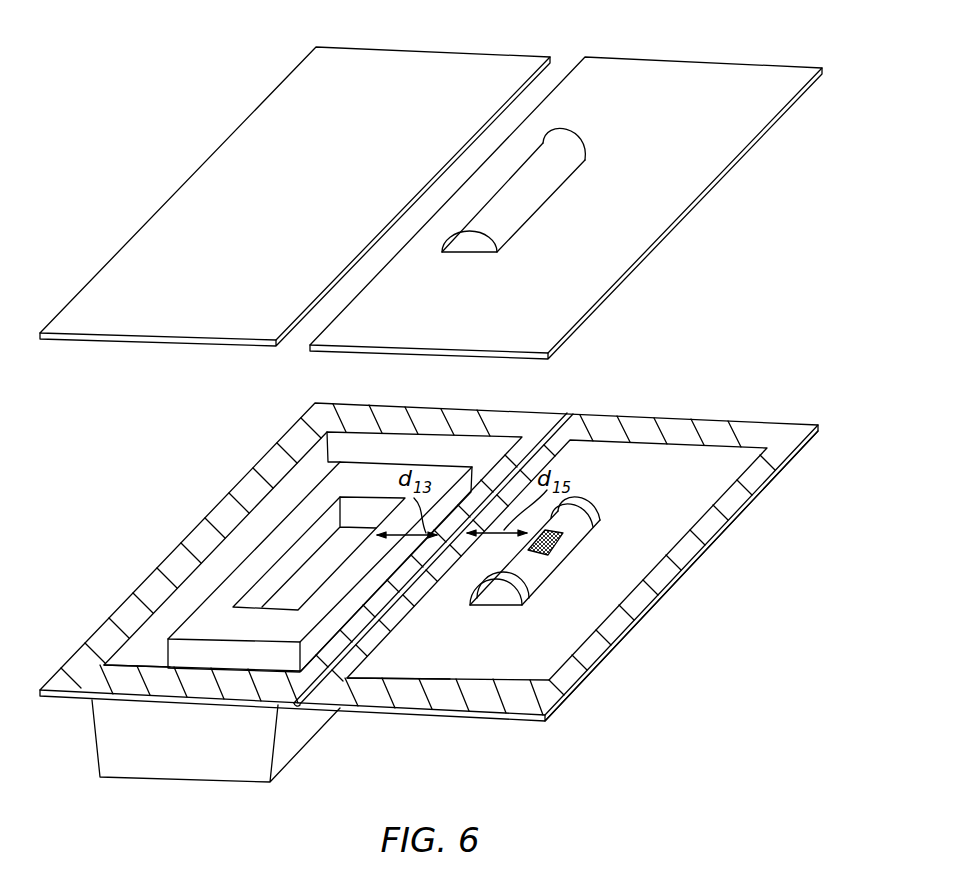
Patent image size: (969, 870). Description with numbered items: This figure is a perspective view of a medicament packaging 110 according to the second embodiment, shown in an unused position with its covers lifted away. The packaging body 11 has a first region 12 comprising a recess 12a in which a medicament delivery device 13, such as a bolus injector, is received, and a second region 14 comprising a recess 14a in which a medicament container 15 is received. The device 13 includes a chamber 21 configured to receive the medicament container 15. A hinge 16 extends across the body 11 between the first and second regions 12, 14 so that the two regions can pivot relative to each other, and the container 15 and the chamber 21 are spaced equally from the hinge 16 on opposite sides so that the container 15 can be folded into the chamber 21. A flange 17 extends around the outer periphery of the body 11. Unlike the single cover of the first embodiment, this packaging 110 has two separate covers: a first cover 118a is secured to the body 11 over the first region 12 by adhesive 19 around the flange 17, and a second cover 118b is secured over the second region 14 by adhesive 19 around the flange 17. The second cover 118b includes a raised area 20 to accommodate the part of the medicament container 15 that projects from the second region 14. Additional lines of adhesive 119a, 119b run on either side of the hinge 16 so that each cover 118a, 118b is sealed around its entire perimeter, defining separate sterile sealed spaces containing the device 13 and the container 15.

The medicament packaging 110 is at (112, 202).
The first cover 118a is at (488, 55).
The second cover 118b is at (745, 70).
The raised area 20 is at (562, 146).
The packaging body 11 is at (437, 720).
The adhesive 19 is at (778, 432).
The flange 17 is at (763, 492).
The first region 12 is at (227, 553).
The recess 12a is at (127, 657).
The medicament delivery device 13 is at (320, 479).
The chamber 21 is at (305, 547).
The additional line of adhesive 119a is at (518, 449).
The additional line of adhesive 119b is at (550, 452).
The second region 14 is at (560, 640).
The recess 14a is at (475, 600).
The medicament container 15 is at (598, 514).
The hinge 16 is at (294, 708).